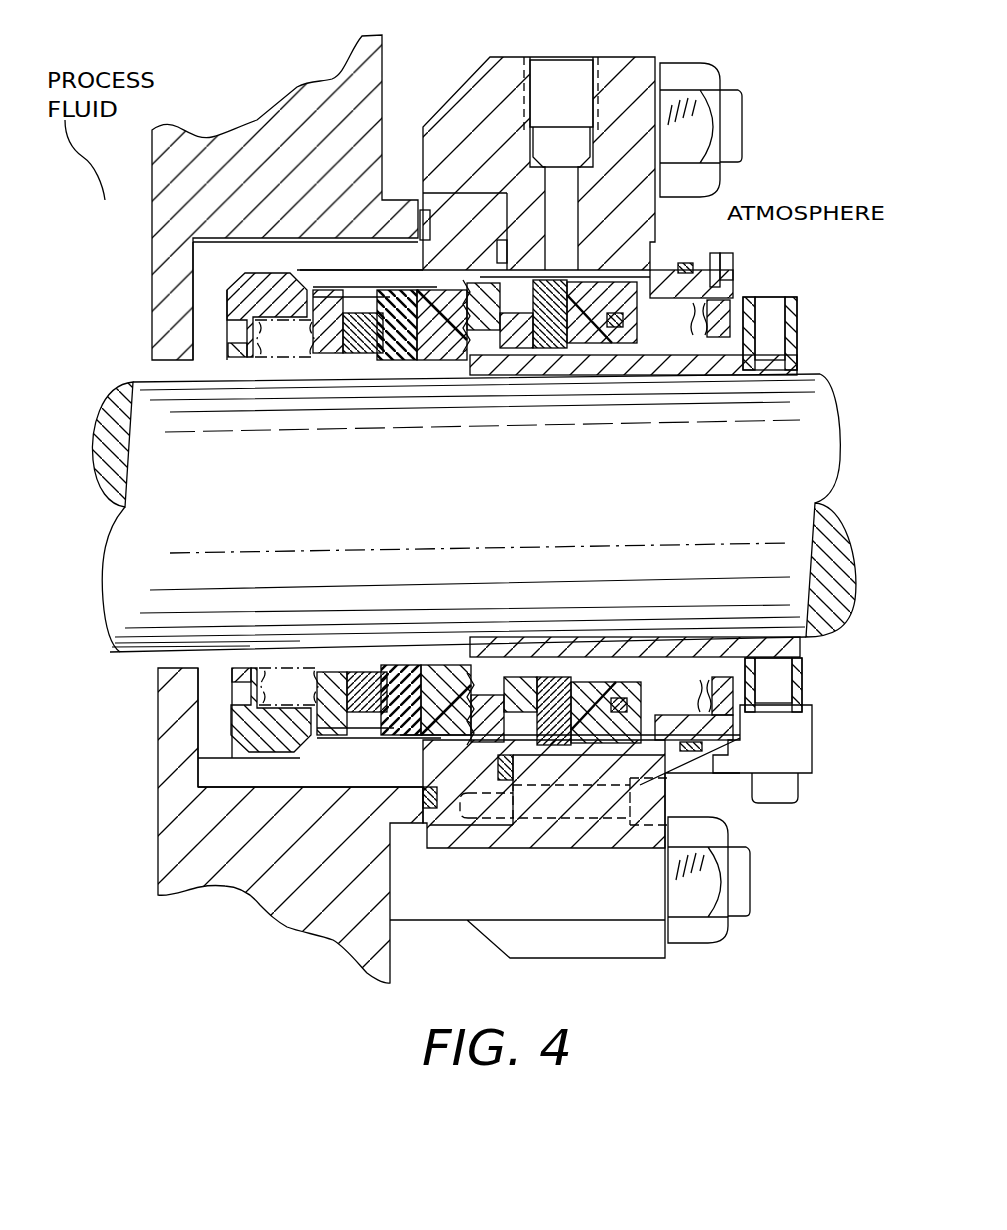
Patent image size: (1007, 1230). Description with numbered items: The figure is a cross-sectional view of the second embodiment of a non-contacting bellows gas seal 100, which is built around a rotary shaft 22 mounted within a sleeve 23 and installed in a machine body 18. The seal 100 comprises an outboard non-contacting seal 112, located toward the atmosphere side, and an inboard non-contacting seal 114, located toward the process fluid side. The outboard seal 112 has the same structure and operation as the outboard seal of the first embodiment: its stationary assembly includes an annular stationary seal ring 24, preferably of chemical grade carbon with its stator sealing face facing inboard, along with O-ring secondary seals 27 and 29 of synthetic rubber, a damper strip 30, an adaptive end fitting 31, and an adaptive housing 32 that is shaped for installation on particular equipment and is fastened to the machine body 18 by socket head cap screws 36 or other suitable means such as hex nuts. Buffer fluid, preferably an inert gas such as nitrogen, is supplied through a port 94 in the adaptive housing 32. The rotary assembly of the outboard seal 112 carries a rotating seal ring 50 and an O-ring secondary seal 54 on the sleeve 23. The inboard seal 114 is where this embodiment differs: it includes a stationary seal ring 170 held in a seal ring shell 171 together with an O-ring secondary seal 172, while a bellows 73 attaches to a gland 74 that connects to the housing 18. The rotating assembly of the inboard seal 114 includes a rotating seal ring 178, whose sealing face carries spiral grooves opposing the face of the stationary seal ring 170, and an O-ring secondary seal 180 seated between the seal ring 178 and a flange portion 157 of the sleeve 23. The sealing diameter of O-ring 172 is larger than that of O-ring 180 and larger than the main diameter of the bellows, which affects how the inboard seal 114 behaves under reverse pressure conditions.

The machine body 18 is at (338, 85).
The rotary shaft 22 is at (808, 453).
The sleeve 23 is at (693, 370).
The stationary seal ring 24 is at (590, 333).
The O-ring secondary seal 27 is at (610, 325).
The O-ring secondary seal 29 is at (683, 262).
The damper strip 30 is at (710, 262).
The adaptive end fitting 31 is at (730, 298).
The adaptive housing 32 is at (627, 87).
The socket head cap screws 36 is at (688, 82).
The rotating seal ring 50 is at (550, 343).
The O-ring secondary seal 54 is at (518, 350).
The bellows 73 is at (253, 360).
The gland 74 is at (307, 317).
The port 94 is at (542, 95).
The non-contacting bellows gas seal 100 is at (753, 177).
The outboard non-contacting seal 112 is at (633, 473).
The inboard non-contacting seal 114 is at (330, 483).
The flange portion 157 is at (463, 290).
The stationary seal ring 170 is at (382, 327).
The seal ring shell 171 is at (327, 357).
The O-ring secondary seal 172 is at (347, 360).
The rotating seal ring 178 is at (413, 360).
The O-ring secondary seal 180 is at (433, 287).